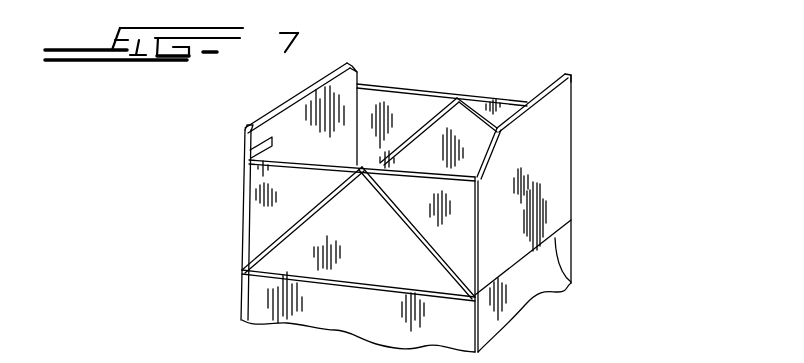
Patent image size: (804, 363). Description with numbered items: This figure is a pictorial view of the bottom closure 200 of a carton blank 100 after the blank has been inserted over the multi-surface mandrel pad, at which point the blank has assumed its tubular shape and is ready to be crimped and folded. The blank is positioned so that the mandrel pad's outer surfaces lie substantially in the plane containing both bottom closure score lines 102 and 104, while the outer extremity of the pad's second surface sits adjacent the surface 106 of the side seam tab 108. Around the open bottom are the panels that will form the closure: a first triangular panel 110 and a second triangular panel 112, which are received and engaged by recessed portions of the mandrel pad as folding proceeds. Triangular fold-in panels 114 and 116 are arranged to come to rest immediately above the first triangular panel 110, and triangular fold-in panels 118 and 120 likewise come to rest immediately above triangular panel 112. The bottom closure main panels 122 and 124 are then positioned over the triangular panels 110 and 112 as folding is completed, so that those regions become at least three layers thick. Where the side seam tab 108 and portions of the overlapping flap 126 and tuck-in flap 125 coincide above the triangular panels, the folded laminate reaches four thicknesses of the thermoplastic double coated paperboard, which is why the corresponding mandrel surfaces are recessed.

The carton blank 100 is at (586, 250).
The bottom closure score line 102 is at (571, 283).
The bottom closure score line 104 is at (330, 286).
The surface of side seam tab 106 is at (244, 129).
The side seam tab 108 is at (250, 150).
The first triangular panel 110 is at (305, 262).
The triangular panel 112 is at (470, 110).
The triangular fold-in panel 114 is at (263, 202).
The triangular fold-in panel 116 is at (460, 257).
The triangular fold-in panel 118 is at (410, 104).
The triangular fold-in panel 120 is at (503, 100).
The main panel 122 is at (550, 212).
The main panel 124 is at (307, 130).
The tuck-in flap 125 is at (336, 82).
The overlapping flap 126 is at (547, 100).
The bottom closure 200 is at (582, 162).